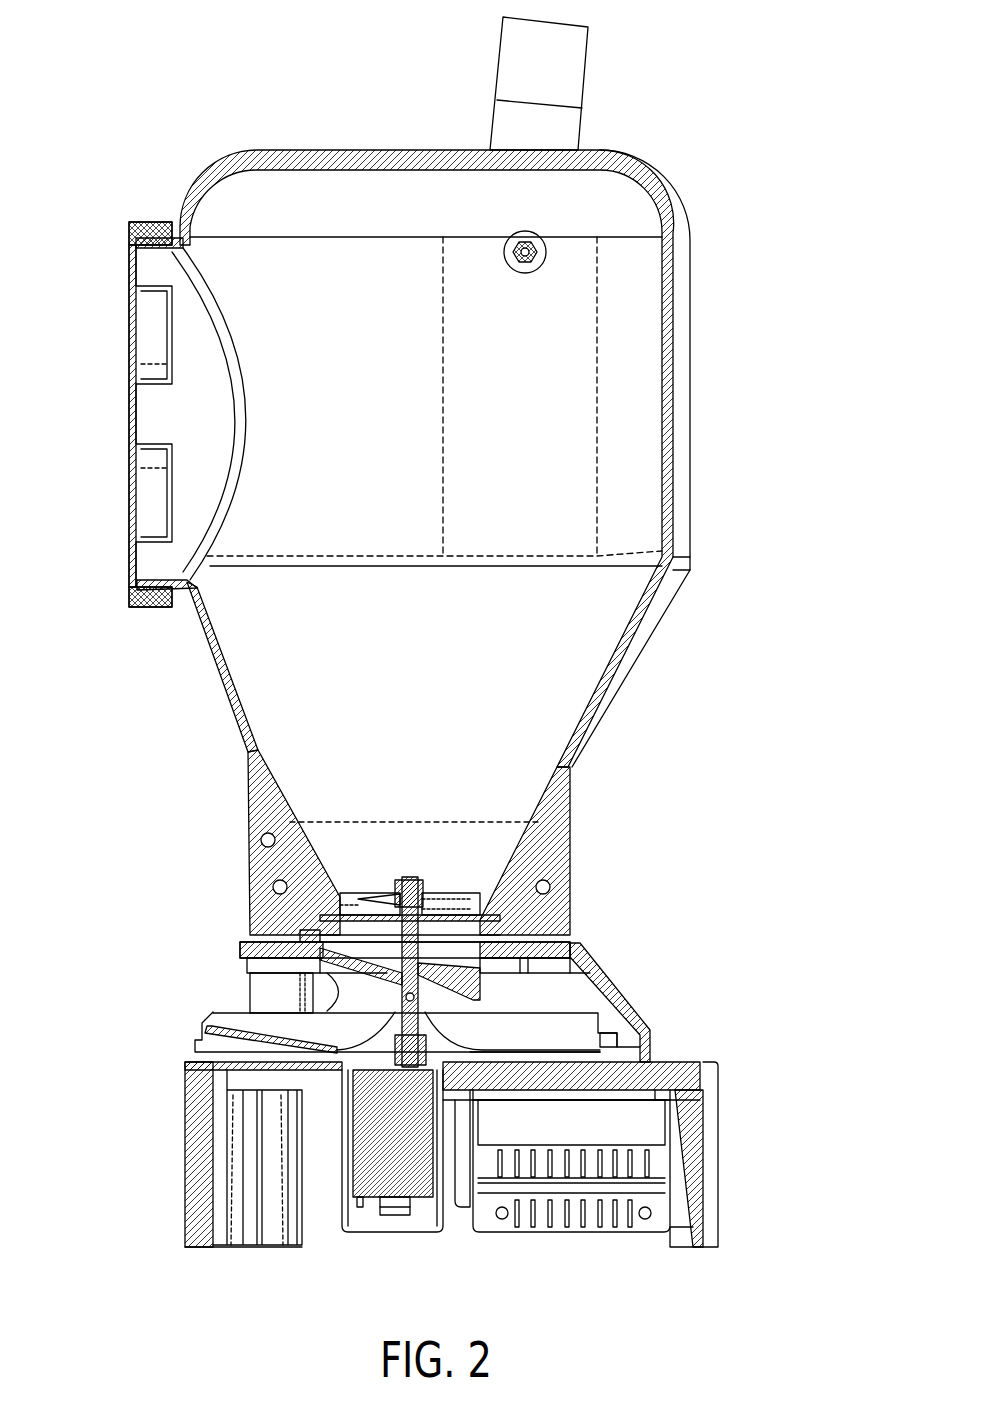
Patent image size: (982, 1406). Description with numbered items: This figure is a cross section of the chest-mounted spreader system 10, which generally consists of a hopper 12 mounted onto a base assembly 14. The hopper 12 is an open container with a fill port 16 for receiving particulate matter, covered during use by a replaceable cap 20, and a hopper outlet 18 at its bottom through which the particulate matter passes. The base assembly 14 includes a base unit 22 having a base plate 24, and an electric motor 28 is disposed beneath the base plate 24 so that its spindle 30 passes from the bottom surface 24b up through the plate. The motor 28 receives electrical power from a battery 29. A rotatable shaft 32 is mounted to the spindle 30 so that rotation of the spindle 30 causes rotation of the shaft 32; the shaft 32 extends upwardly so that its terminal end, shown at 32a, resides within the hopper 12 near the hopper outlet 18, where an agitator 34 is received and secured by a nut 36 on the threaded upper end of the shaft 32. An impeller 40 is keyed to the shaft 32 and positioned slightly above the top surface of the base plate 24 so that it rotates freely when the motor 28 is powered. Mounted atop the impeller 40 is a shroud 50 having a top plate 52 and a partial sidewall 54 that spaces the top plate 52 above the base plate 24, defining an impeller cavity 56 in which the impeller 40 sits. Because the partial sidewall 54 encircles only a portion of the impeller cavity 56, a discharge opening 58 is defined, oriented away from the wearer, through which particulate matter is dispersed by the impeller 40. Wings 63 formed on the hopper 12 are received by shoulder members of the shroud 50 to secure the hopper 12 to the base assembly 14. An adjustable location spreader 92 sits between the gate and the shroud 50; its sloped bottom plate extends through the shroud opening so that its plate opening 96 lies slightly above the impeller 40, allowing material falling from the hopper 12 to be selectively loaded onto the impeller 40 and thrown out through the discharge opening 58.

The chest-mounted spreader system 10 is at (158, 135).
The hopper 12 is at (325, 155).
The base assembly 14 is at (453, 1138).
The fill port 16 is at (124, 452).
The hopper outlet 18 is at (472, 905).
The replaceable cap 20 is at (153, 610).
The base unit 22 is at (185, 1203).
The base plate 24 is at (683, 1058).
The bottom surface 24b is at (610, 1057).
The electric motor 28 is at (370, 1180).
The battery 29 is at (603, 1213).
The spindle 30 is at (425, 990).
The rotatable shaft 32 is at (395, 975).
The shaft upper end 32a is at (403, 878).
The agitator 34 is at (365, 893).
The nut 36 is at (423, 895).
The impeller 40 is at (202, 1030).
The shroud 50 is at (473, 992).
The top plate 52 is at (553, 935).
The partial sidewall 54 is at (633, 1012).
The impeller cavity 56 is at (560, 989).
The discharge opening 58 is at (228, 992).
The wing 63 is at (250, 865).
The adjustable location spreader 92 is at (476, 985).
The plate opening 96 is at (445, 990).